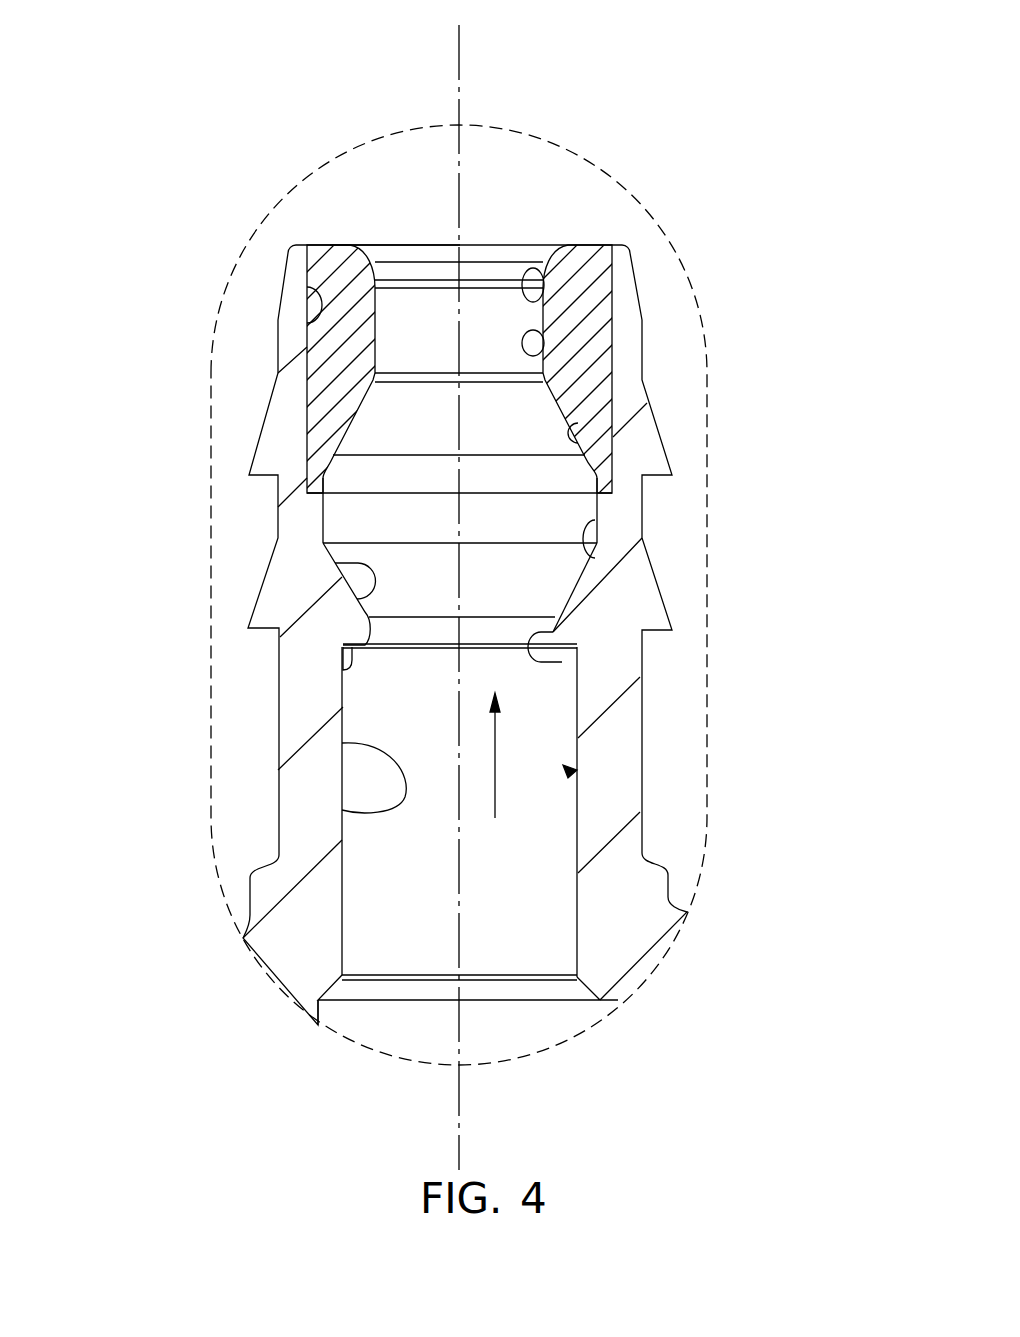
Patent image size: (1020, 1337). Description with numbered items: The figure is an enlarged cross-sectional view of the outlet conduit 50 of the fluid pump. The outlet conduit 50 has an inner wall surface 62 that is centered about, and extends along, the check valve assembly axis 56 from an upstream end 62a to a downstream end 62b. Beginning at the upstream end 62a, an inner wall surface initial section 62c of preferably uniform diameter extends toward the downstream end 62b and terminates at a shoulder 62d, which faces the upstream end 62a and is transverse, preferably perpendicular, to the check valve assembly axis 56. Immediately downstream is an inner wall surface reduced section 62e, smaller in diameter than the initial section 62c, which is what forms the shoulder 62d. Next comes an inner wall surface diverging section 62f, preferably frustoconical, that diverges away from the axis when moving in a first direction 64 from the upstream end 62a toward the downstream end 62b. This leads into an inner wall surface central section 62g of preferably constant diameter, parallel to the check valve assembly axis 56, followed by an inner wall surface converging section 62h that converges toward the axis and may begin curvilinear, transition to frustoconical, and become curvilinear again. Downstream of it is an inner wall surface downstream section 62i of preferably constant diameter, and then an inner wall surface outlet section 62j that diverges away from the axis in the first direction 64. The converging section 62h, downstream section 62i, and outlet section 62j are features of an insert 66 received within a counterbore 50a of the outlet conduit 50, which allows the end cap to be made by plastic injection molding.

The outlet conduit 50 is at (272, 448).
The counterbore 50a is at (320, 297).
The check valve assembly axis 56 is at (462, 69).
The inner wall surface 62 is at (575, 770).
The upstream end 62a is at (385, 1000).
The downstream end 62b is at (342, 246).
The inner wall surface initial section 62c is at (343, 746).
The shoulder 62d is at (343, 668).
The inner wall surface reduced section 62e is at (578, 660).
The inner wall surface diverging section 62f is at (365, 563).
The inner wall surface central section 62g is at (585, 560).
The inner wall surface converging section 62h is at (560, 442).
The inner wall surface downstream section 62i is at (528, 357).
The inner wall surface outlet section 62j is at (527, 302).
The first direction 64 is at (496, 756).
The insert 66 is at (313, 358).